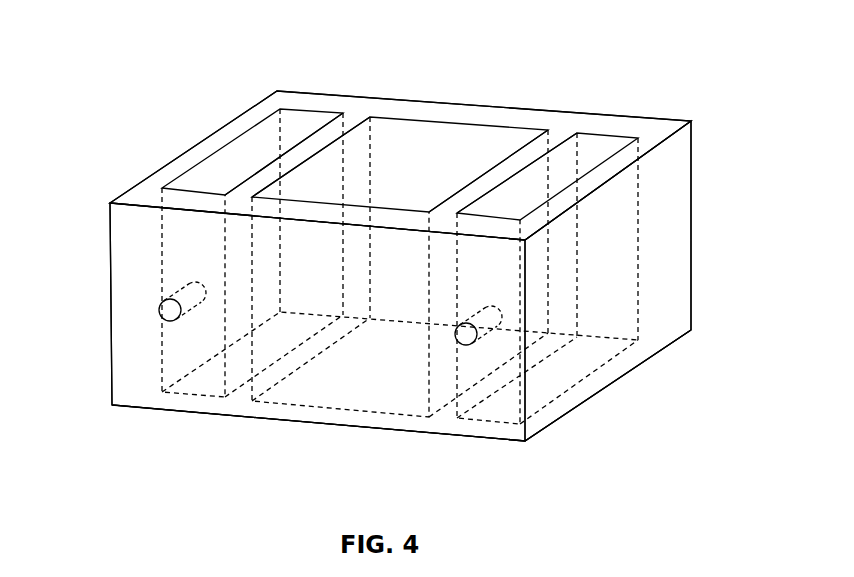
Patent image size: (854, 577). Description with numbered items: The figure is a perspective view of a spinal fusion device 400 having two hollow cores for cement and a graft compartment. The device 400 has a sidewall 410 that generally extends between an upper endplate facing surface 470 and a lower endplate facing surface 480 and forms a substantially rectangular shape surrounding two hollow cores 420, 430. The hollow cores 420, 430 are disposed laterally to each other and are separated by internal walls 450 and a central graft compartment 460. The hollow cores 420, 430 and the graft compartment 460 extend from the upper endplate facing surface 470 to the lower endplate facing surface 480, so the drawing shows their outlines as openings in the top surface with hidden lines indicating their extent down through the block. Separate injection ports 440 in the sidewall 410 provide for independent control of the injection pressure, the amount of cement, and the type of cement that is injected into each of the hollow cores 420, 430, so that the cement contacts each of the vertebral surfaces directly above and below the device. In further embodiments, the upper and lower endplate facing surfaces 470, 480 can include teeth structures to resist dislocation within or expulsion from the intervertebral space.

The spinal fusion device 400 is at (153, 57).
The sidewall 410 is at (98, 268).
The hollow core 420 is at (257, 158).
The hollow core 430 is at (604, 142).
The injection port 440 is at (172, 310).
The internal wall 450 is at (332, 132).
The central graft compartment 460 is at (408, 133).
The upper endplate facing surface 470 is at (177, 137).
The lower endplate facing surface 480 is at (443, 450).